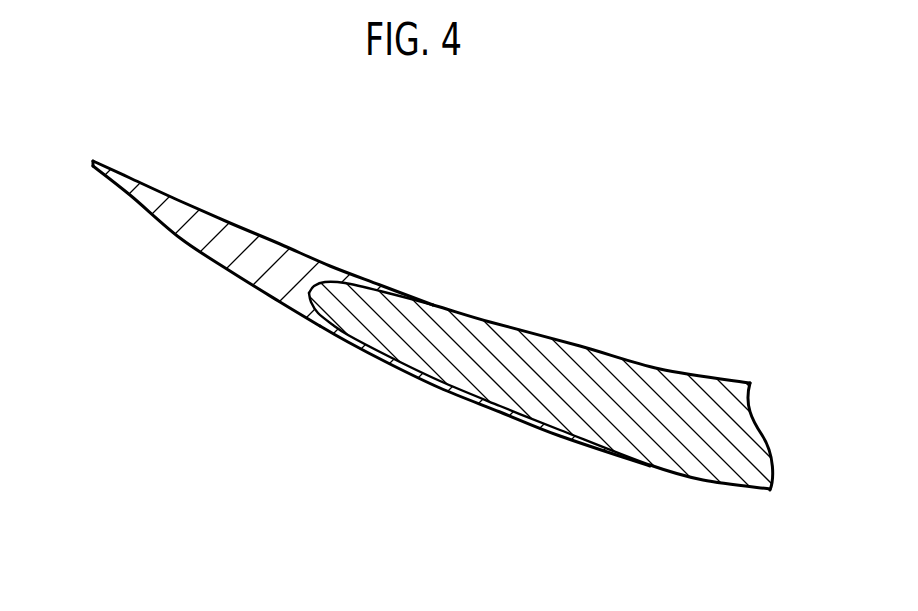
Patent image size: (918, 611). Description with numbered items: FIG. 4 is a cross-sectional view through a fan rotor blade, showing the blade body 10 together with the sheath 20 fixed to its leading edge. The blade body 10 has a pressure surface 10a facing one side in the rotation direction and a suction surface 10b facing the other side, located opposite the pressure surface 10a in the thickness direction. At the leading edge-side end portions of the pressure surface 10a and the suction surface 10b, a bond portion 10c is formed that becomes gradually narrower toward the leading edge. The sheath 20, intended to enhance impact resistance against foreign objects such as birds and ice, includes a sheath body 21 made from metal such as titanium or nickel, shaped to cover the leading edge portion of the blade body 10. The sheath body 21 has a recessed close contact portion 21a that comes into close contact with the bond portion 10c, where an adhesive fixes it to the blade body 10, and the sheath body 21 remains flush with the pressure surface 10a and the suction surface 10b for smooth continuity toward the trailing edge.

The blade body 10 is at (705, 335).
The pressure surface 10a is at (608, 355).
The suction surface 10b is at (703, 487).
The bond portion 10c is at (358, 290).
The sheath 20 is at (158, 180).
The sheath body 21 is at (207, 240).
The close contact portion 21a is at (317, 293).